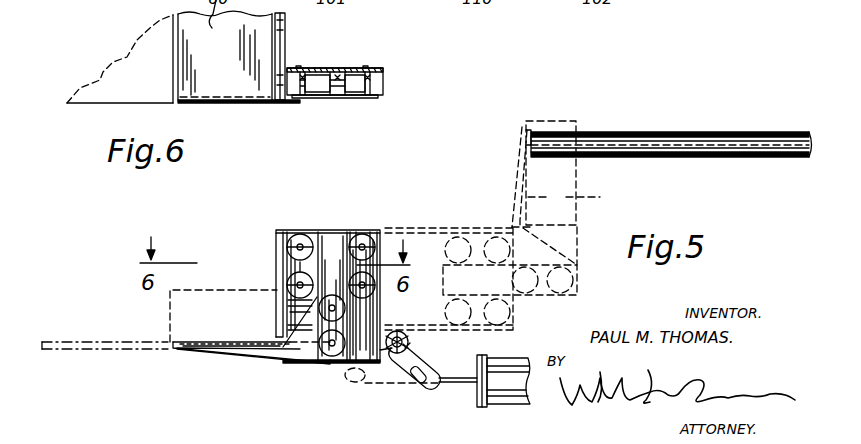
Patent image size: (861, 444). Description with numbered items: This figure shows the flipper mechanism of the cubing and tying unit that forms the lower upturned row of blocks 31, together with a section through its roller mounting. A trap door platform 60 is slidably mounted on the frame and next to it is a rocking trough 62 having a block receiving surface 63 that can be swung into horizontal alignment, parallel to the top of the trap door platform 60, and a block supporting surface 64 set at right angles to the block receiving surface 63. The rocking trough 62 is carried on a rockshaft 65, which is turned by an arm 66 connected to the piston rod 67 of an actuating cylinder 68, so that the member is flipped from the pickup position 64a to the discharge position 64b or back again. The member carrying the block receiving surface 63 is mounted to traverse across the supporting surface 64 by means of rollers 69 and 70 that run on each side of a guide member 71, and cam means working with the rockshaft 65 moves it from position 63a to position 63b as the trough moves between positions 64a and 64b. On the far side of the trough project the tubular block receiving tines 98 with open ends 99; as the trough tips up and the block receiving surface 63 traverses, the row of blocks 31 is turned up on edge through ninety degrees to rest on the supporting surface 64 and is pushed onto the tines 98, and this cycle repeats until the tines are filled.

In FIG. 5, the blocks 31 is at (163, 302).
In FIG. 6, the trap door platform 60 is at (113, 66).
In FIG. 5, the trap door platform 60 is at (70, 342).
In FIG. 5, the rocking trough 62 is at (280, 226).
In FIG. 5, the block receiving surface 63 is at (202, 338).
In FIG. 5, the position of block receiving member 63a is at (207, 350).
In FIG. 5, the position of block receiving member 63b is at (572, 196).
In FIG. 6, the block supporting surface 64 is at (287, 40).
In FIG. 5, the block supporting surface 64 is at (277, 282).
In FIG. 5, the pickup position 64a is at (272, 262).
In FIG. 5, the discharge position 64b is at (467, 224).
In FIG. 5, the rockshaft 65 is at (410, 338).
In FIG. 5, the arm 66 is at (406, 382).
In FIG. 5, the piston rod 67 is at (463, 385).
In FIG. 5, the actuating cylinder 68 is at (508, 395).
In FIG. 6, the rollers 69 is at (332, 68).
In FIG. 5, the rollers 69 is at (322, 364).
In FIG. 6, the rollers 70 is at (300, 96).
In FIG. 5, the rollers 70 is at (302, 236).
In FIG. 6, the guide member 71 is at (355, 96).
In FIG. 5, the guide member 71 is at (345, 233).
In FIG. 5, the block receiving tines 98 is at (700, 132).
In FIG. 5, the open ends 99 is at (515, 145).